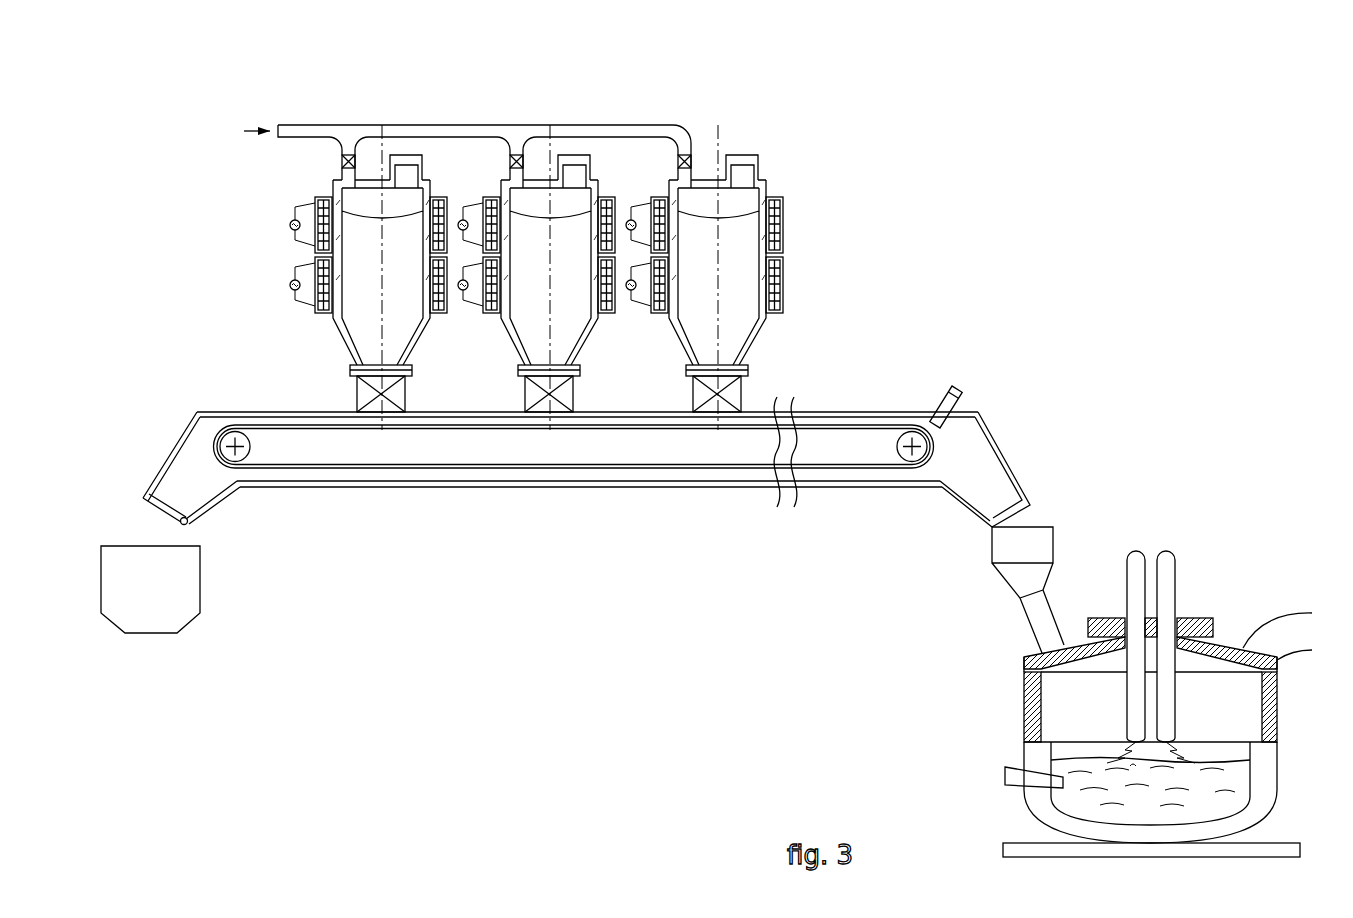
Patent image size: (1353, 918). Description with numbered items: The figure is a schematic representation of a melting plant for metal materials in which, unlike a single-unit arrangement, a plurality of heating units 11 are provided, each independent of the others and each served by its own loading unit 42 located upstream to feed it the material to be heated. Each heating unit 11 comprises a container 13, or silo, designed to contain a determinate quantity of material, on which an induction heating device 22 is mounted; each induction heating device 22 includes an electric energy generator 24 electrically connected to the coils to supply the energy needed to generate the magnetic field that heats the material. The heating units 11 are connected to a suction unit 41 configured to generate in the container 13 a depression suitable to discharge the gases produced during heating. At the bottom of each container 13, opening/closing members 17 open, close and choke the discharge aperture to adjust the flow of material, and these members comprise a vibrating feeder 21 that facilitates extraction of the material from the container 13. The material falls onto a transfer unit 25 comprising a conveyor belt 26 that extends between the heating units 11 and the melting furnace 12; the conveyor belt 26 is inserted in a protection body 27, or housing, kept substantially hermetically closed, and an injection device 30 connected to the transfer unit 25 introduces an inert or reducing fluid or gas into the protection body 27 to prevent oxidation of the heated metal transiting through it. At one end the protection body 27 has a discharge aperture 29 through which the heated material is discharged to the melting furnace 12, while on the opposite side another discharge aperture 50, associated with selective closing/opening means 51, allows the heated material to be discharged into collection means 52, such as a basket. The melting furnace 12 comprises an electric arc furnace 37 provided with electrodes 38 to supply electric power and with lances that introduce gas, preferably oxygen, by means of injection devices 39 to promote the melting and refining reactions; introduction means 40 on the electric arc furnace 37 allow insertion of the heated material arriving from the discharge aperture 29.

The heating unit 11 is at (561, 259).
The melting furnace 12 is at (1139, 680).
The container 13 is at (428, 351).
The opening/closing members 17 is at (349, 370).
The vibrating feeder 21 is at (372, 397).
The induction heating device 22 is at (440, 194).
The electric energy generator 24 is at (290, 224).
The transfer unit 25 is at (576, 459).
The conveyor belt 26 is at (513, 470).
The protection body 27 is at (892, 414).
The discharge aperture 29 is at (1026, 496).
The injection device 30 is at (952, 400).
The electric arc furnace 37 is at (1265, 775).
The electrodes 38 is at (1165, 565).
The injection devices 39 is at (1015, 776).
The introduction means 40 is at (1000, 548).
The suction unit 41 is at (345, 152).
The loading unit 42 is at (403, 152).
The discharge aperture 50 is at (155, 489).
The selective closing/opening means 51 is at (158, 504).
The collection means 52 is at (175, 585).